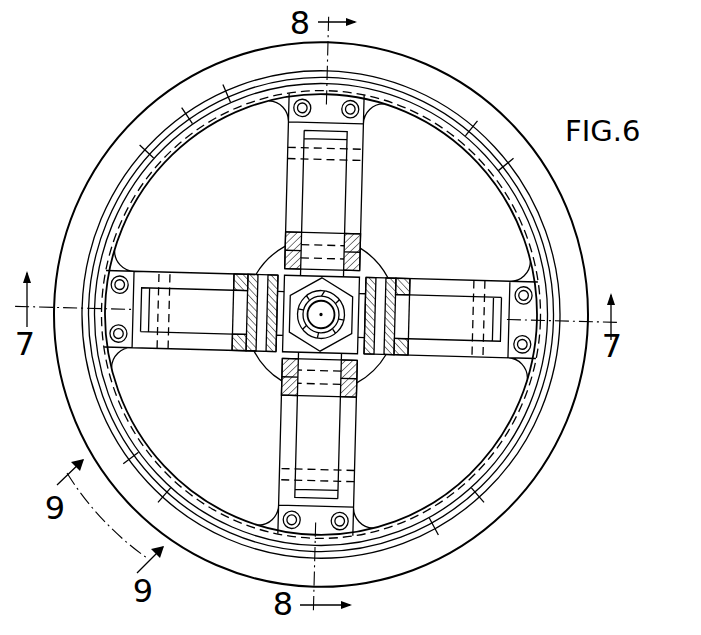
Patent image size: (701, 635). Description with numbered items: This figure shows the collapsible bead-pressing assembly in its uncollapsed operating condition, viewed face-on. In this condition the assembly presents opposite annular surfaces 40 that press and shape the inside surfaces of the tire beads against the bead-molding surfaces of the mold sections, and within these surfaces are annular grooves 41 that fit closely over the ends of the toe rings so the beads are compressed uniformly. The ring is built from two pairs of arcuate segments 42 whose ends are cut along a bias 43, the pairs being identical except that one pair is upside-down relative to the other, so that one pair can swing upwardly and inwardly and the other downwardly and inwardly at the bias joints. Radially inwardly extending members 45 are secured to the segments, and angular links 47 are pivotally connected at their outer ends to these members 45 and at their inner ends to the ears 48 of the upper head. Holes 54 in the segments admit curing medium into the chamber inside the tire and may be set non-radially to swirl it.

The annular surfaces 40 is at (455, 553).
The annular grooves 41 is at (438, 516).
The arcuate segments 42 is at (393, 578).
The bias 43 is at (493, 498).
The radially inwardly extending members 45 is at (362, 470).
The angular links 47 is at (396, 318).
The ears 48 is at (372, 352).
The holes 54 is at (398, 530).